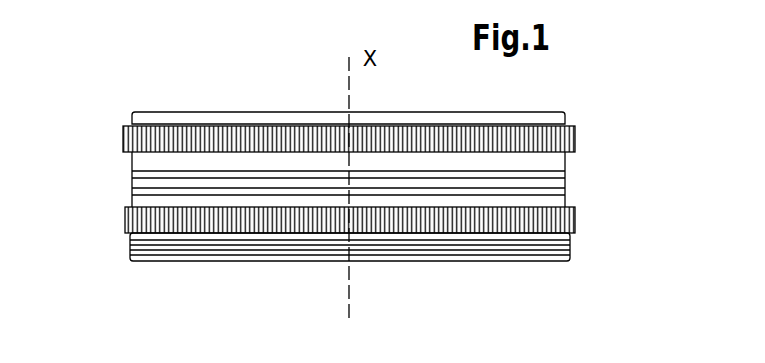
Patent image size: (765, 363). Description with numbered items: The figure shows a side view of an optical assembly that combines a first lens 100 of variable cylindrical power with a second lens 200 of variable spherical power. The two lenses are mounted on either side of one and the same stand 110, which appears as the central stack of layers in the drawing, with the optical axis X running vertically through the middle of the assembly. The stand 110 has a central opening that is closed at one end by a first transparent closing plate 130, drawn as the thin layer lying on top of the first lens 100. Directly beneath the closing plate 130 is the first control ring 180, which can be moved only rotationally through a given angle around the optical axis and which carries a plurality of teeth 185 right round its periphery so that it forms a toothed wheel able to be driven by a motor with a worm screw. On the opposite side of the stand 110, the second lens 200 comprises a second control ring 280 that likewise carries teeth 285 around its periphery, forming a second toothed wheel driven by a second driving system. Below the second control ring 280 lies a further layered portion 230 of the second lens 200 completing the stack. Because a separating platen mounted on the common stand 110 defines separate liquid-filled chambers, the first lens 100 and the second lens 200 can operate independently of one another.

The first lens 100 is at (585, 131).
The stand 110 is at (565, 176).
The first closing plate 130 is at (299, 111).
The first control ring 180 is at (132, 160).
The teeth 185 is at (123, 132).
The second lens 200 is at (588, 221).
The bottom multilayer stack 230 is at (279, 261).
The second control ring 280 is at (132, 200).
The teeth 285 is at (125, 218).